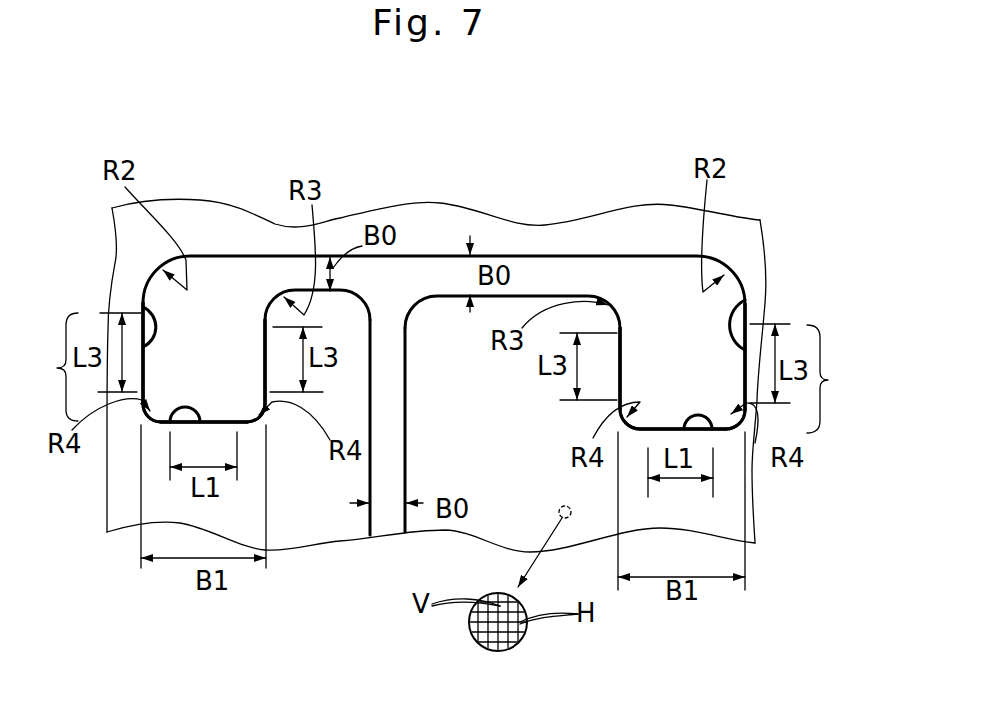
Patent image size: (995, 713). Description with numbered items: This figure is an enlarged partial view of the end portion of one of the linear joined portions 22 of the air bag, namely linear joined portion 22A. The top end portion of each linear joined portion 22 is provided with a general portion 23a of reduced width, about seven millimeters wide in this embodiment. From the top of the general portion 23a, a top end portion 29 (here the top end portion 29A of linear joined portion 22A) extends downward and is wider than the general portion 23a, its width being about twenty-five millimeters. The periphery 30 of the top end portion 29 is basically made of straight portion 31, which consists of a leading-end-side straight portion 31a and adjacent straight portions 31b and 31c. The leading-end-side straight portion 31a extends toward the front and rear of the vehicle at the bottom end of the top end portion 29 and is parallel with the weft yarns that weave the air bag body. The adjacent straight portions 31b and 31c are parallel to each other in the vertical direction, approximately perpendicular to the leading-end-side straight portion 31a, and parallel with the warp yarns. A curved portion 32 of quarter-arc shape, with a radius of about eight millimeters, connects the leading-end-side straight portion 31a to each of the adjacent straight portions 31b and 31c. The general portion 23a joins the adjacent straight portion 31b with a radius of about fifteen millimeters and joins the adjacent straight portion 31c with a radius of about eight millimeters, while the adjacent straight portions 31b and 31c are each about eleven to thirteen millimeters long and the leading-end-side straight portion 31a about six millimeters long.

The linear joined portion 22 is at (373, 197).
The linear joined portion 22A is at (373, 197).
The general portion 23a is at (405, 470).
The top end portion 29 is at (440, 373).
The top end portion 29A is at (207, 343).
The periphery 30 is at (142, 401).
The straight portion 31 is at (432, 337).
The leading-end-side straight portion 31a is at (163, 423).
The adjacent straight portion 31b is at (143, 303).
The adjacent straight portion 31c is at (267, 353).
The curved portion 32 is at (265, 410).